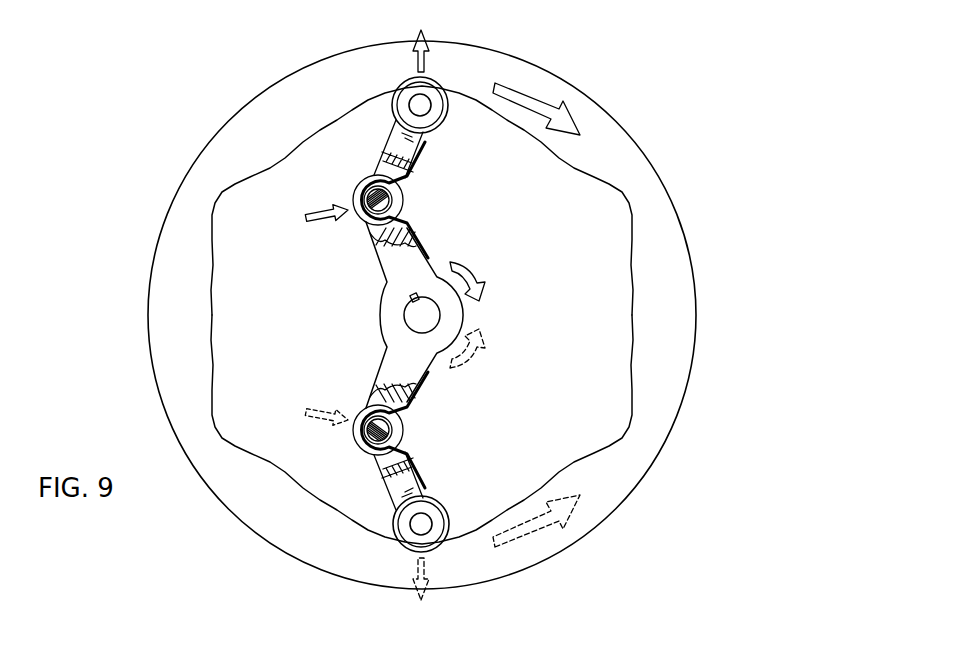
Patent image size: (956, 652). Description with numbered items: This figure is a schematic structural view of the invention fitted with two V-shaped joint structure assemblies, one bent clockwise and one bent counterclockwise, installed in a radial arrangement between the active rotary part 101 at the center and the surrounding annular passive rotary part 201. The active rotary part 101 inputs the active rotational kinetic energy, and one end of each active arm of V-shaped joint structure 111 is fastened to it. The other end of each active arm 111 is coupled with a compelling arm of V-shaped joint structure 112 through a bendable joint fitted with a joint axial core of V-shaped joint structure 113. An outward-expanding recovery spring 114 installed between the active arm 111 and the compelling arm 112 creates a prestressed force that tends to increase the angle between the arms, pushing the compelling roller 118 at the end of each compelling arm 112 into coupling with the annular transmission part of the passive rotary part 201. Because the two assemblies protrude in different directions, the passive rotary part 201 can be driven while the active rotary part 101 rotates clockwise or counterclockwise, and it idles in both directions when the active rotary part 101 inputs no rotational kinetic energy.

The passive rotary part 201 is at (490, 73).
The active rotary part 101 is at (428, 318).
The active arm of V-shaped joint structure 111 is at (398, 266).
The compelling arm of V-shaped joint structure 112 is at (397, 138).
The joint axial core of V-shaped joint structure 113 is at (350, 199).
The outward-expanding recovery spring 114 is at (423, 232).
The compelling roller 118 is at (447, 127).